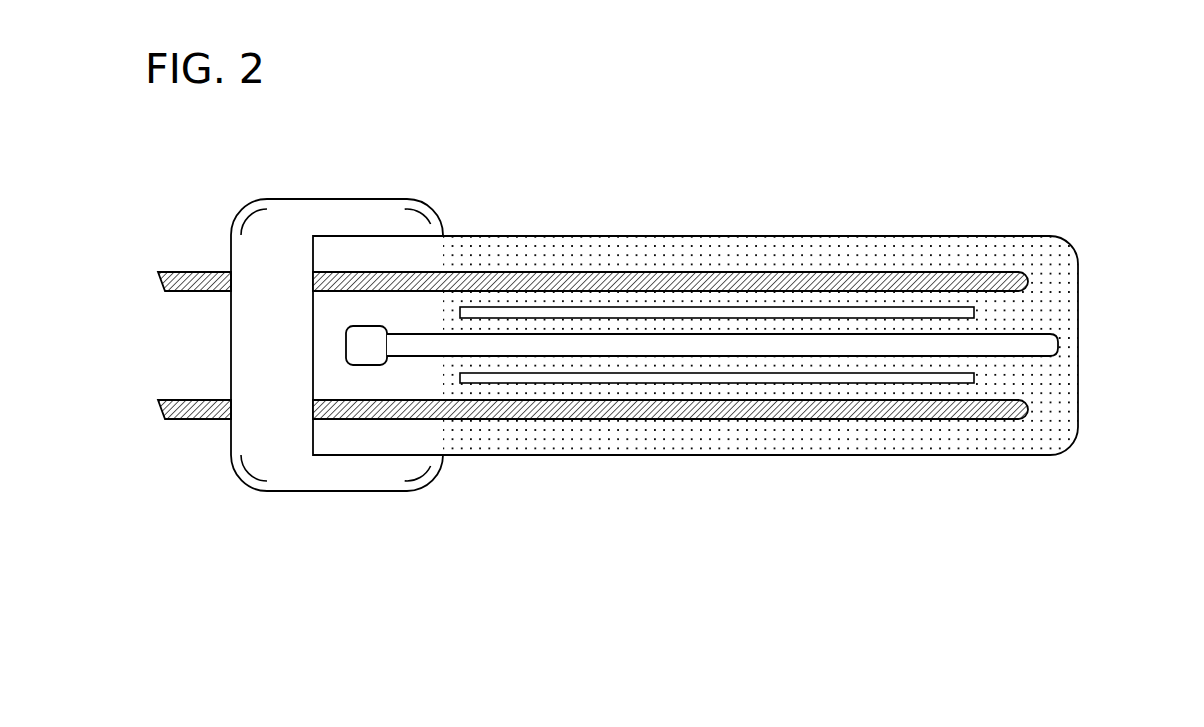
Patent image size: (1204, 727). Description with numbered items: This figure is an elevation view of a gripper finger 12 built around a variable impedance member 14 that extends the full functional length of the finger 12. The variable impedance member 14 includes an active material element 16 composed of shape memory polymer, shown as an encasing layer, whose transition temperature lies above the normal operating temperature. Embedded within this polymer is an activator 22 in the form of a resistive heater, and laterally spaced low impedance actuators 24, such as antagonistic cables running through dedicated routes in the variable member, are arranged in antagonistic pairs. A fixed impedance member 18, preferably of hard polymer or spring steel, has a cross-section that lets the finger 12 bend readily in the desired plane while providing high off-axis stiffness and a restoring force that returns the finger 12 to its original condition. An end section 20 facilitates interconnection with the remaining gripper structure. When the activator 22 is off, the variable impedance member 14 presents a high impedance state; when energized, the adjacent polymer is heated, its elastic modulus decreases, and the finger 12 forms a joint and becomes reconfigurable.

The finger 12 is at (1146, 212).
The variable impedance member 14 is at (1077, 200).
The active material element 16 is at (782, 430).
The fixed impedance member 18 is at (527, 357).
The end section 20 is at (290, 491).
The activator 22 is at (658, 383).
The low impedance actuators 24 is at (933, 418).